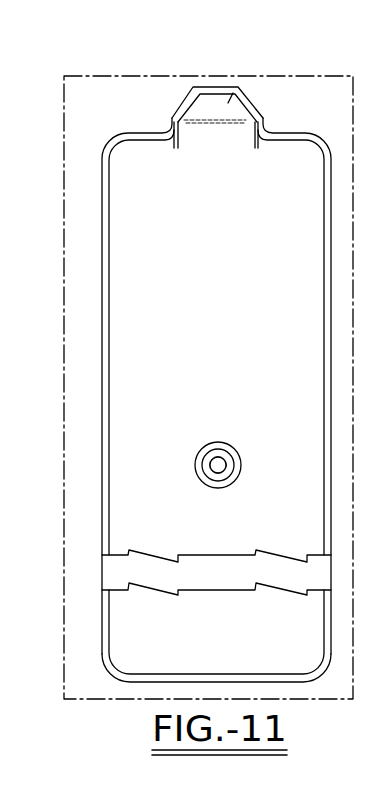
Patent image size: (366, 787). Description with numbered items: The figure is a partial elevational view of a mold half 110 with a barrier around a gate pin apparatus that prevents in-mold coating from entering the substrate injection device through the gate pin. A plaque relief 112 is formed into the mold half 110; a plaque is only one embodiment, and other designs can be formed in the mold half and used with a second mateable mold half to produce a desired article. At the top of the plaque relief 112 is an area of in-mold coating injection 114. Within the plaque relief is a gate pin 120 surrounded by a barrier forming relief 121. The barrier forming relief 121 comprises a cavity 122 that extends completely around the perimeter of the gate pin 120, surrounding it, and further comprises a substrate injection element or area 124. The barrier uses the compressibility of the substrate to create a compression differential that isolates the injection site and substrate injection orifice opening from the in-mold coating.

The mold half 110 is at (167, 76).
The plaque relief 112 is at (102, 237).
The area of in-mold coating injection 114 is at (242, 77).
The gate pin 120 is at (220, 440).
The barrier forming relief 121 is at (210, 443).
The cavity 122 is at (202, 448).
The substrate injection element or area 124 is at (226, 473).